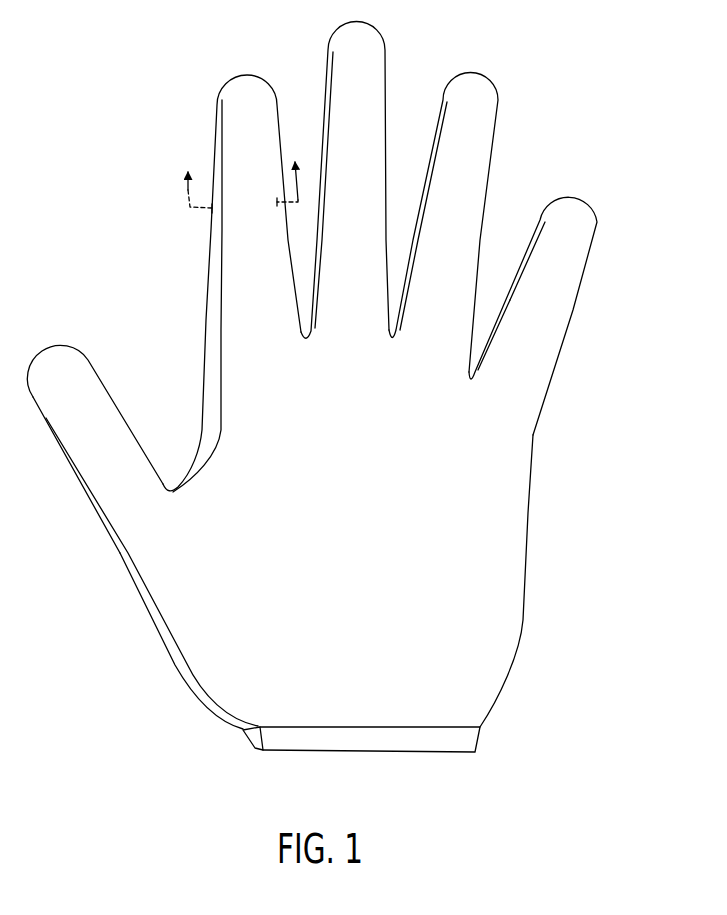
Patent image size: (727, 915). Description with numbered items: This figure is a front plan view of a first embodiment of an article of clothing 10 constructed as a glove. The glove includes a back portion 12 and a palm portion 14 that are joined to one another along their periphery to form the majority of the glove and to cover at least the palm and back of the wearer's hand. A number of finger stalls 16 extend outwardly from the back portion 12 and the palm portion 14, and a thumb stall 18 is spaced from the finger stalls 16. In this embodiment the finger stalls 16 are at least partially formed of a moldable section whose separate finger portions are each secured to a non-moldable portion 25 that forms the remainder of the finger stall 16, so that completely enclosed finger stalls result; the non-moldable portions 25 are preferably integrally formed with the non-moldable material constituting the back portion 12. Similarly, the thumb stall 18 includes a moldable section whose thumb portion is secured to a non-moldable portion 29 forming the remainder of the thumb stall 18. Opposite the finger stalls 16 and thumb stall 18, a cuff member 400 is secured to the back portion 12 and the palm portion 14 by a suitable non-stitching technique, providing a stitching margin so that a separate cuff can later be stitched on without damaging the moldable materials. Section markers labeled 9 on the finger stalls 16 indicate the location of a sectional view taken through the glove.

The article of clothing 10 is at (110, 290).
The back portion 12 is at (507, 488).
The palm portion 14 is at (480, 345).
The finger stalls 16 is at (235, 133).
The thumb stall 18 is at (98, 418).
The non-moldable portion 25 is at (233, 250).
The non-moldable portion 29 is at (105, 470).
The cuff member 400 is at (467, 737).
The cross-section line 9 is at (243, 184).